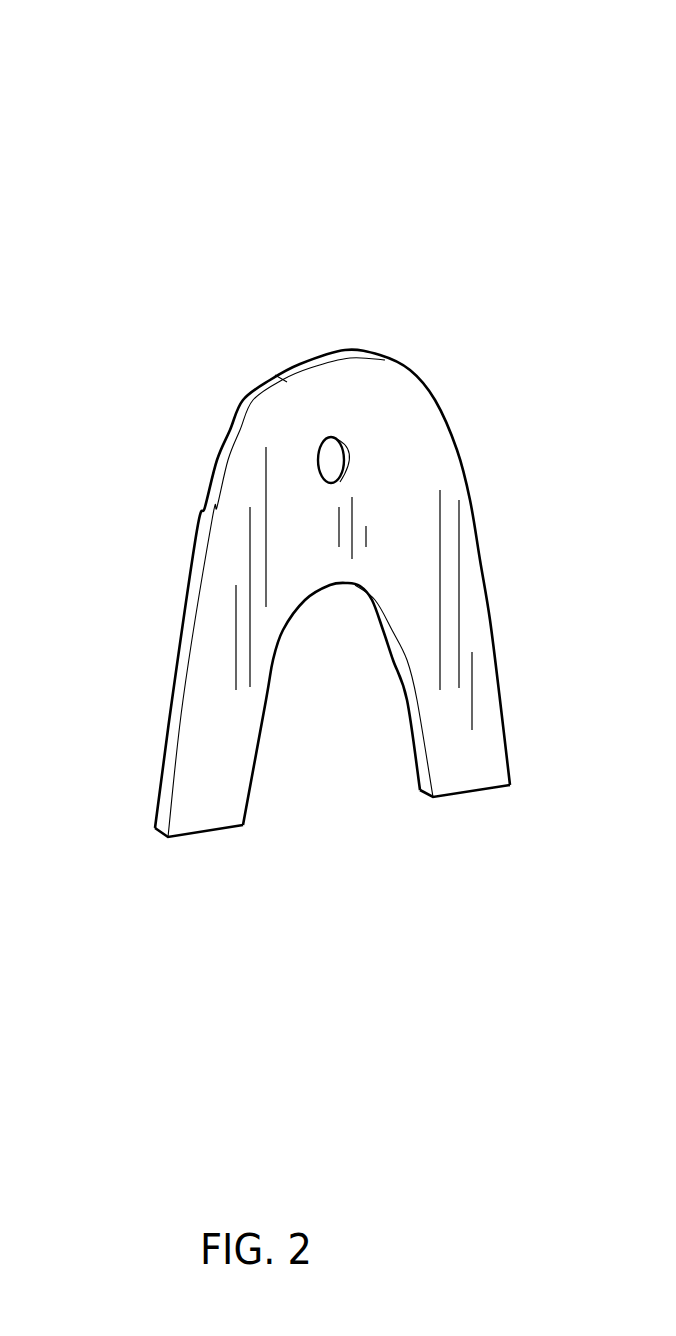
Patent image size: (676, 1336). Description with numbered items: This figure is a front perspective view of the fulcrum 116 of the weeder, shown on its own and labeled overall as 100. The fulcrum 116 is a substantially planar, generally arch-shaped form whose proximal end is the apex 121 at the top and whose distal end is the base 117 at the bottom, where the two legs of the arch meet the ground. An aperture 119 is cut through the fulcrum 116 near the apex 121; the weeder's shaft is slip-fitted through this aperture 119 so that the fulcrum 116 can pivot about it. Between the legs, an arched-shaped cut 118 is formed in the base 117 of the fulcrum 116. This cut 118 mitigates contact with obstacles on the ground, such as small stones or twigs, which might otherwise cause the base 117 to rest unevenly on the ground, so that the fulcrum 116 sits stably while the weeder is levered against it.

The bracket 100 is at (278, 50).
The fulcrum 116 is at (215, 534).
The base 117 is at (450, 808).
The arched-shaped cut 118 is at (335, 768).
The aperture 119 is at (345, 463).
The apex 121 is at (333, 335).